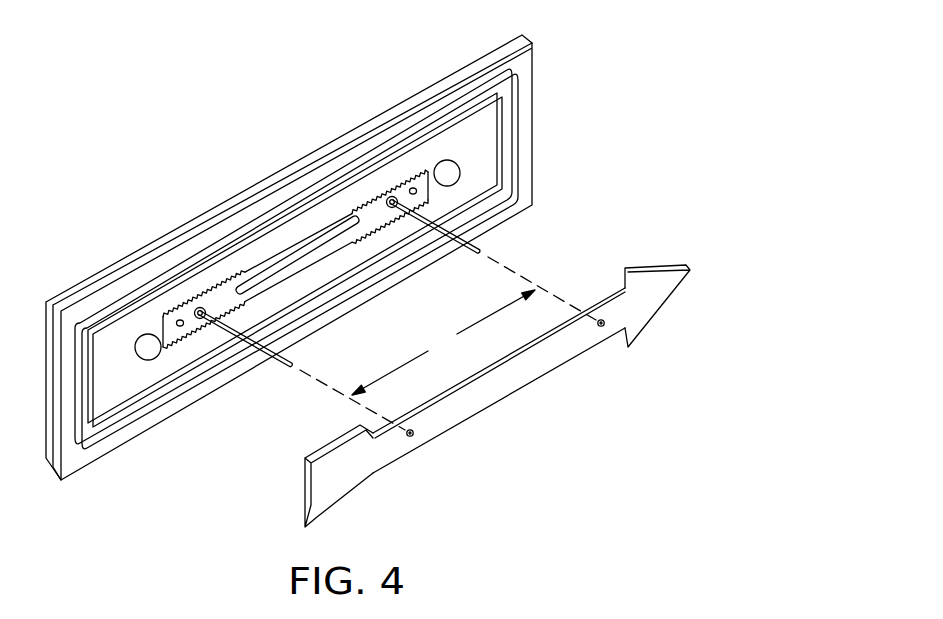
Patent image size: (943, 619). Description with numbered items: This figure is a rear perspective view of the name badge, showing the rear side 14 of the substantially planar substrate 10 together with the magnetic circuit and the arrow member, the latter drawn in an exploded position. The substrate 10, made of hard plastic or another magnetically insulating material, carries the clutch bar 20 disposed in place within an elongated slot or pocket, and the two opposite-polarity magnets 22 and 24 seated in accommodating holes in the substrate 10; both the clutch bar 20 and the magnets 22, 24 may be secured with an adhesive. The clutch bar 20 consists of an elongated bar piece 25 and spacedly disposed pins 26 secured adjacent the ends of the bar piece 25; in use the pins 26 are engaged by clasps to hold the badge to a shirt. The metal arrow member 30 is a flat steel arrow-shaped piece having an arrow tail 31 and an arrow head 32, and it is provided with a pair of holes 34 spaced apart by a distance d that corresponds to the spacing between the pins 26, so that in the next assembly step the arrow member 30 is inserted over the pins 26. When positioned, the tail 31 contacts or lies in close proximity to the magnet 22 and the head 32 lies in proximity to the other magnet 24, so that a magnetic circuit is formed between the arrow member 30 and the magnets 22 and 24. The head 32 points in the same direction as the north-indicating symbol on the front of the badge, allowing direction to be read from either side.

The substrate 10 is at (255, 178).
The rear side 14 is at (527, 100).
The clutch bar 20 is at (353, 243).
The magnet 22 is at (148, 348).
The magnet 24 is at (450, 173).
The bar piece 25 is at (378, 193).
The pins 26 is at (212, 320).
The arrow member 30 is at (530, 382).
The arrow tail 31 is at (355, 478).
The arrow head 32 is at (660, 287).
The holes 34 is at (413, 436).